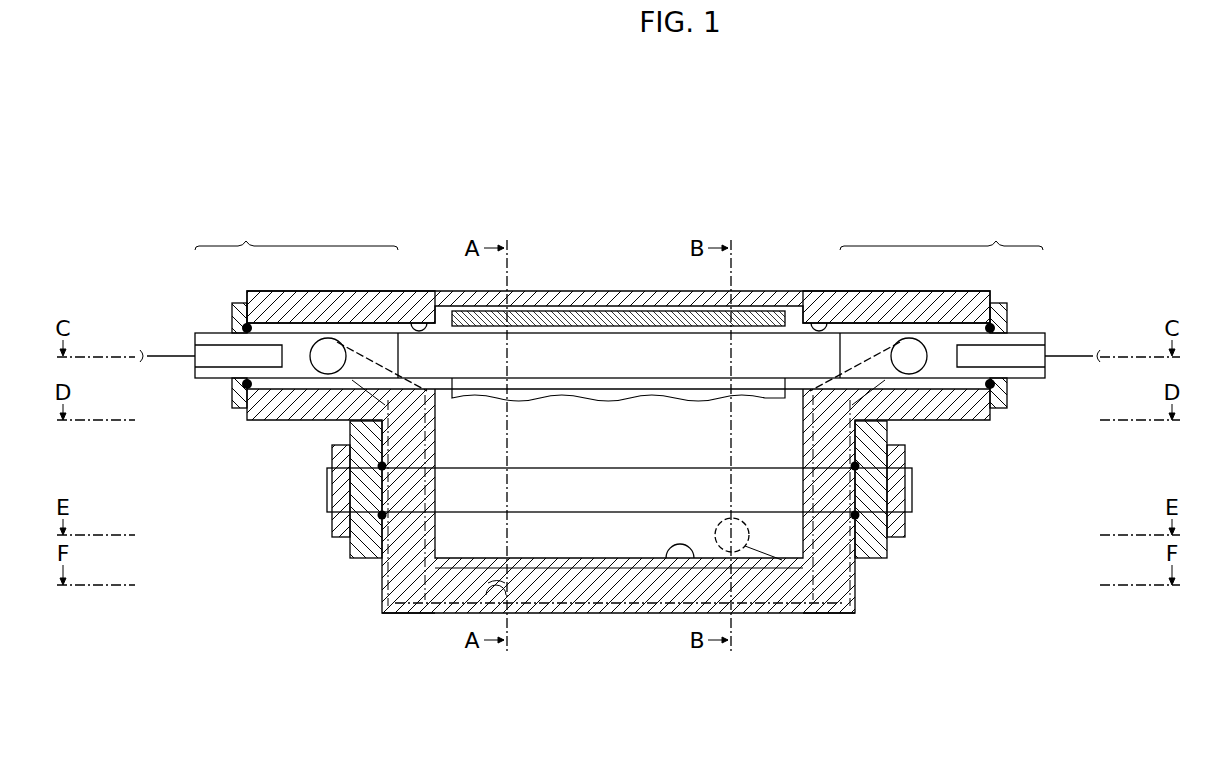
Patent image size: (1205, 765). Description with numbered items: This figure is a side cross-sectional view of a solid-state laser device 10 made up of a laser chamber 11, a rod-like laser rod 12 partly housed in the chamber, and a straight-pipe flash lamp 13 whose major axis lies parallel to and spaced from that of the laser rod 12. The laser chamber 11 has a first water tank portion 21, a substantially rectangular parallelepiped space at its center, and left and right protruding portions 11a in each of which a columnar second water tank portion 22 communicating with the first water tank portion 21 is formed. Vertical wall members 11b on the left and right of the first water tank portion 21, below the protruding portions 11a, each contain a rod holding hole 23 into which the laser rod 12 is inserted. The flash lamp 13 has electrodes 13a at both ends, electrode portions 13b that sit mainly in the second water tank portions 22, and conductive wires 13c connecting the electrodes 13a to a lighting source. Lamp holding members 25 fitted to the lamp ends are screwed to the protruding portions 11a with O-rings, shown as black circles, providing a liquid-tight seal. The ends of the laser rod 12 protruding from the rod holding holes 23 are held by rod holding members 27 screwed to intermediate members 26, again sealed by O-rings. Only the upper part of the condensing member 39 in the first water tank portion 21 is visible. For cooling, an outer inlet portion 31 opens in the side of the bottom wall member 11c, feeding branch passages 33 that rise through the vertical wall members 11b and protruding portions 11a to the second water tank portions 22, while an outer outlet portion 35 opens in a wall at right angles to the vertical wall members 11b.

The solid-state laser device 10 is at (606, 205).
The laser chamber 11 is at (581, 290).
The protruding portion 11a is at (338, 292).
The vertical wall member 11b is at (436, 441).
The bottom wall member 11c is at (586, 600).
The laser rod 12 is at (658, 500).
The flash lamp 13 is at (644, 343).
The electrode 13a is at (215, 370).
The electrode portion 13b is at (619, 233).
The conductive wire 13c is at (148, 362).
The first water tank portion 21 is at (671, 560).
The second water tank portion 22 is at (425, 312).
The rod holding hole 23 is at (383, 487).
The lamp holding member 25 is at (243, 410).
The intermediate member 26 is at (362, 562).
The rod holding member 27 is at (340, 538).
The outer inlet portion 31 is at (458, 622).
The branch passage 33 is at (400, 618).
The outer outlet portion 35 is at (787, 612).
The condensing member 39 is at (766, 310).